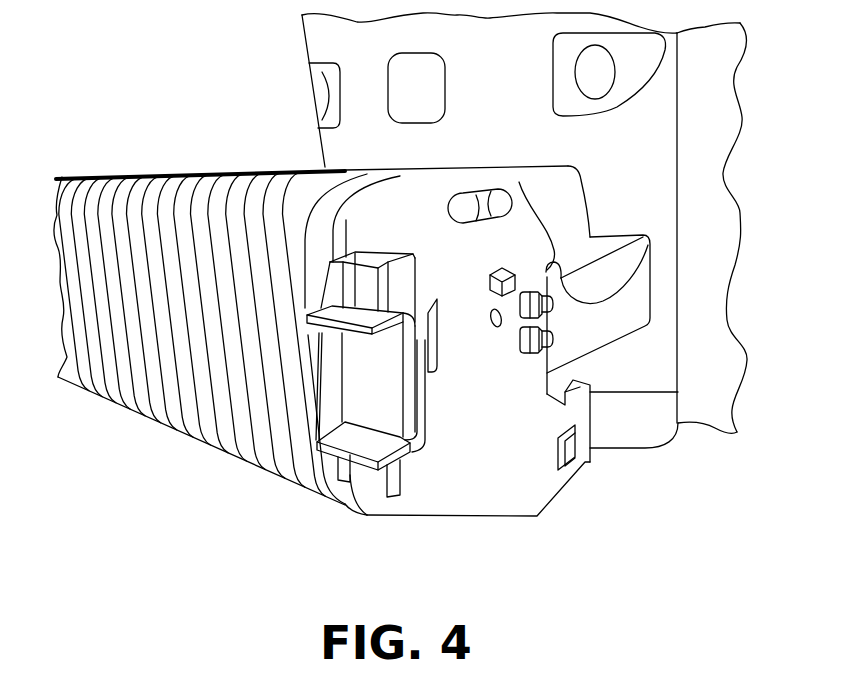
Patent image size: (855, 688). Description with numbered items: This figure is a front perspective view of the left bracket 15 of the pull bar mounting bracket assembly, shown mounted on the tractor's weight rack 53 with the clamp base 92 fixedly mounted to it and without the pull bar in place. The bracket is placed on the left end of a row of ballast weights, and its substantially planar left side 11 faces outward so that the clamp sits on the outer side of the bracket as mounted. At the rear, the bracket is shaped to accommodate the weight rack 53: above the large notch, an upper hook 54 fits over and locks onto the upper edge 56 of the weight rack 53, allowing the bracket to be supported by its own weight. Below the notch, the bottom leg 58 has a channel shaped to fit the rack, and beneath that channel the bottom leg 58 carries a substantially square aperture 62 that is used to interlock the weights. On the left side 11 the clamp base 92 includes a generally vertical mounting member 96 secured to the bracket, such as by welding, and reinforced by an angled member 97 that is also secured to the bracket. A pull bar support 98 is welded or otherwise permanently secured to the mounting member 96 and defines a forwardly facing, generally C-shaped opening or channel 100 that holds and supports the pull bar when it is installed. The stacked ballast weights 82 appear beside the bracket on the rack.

The left side 11 is at (412, 210).
The left bracket 15 is at (475, 262).
The weight rack 53 is at (597, 330).
The upper hook 54 is at (643, 250).
The upper edge 56 is at (519, 182).
The bottom leg 58 is at (533, 480).
The square aperture 62 is at (583, 463).
The cooling fins 82 is at (226, 491).
The clamp base 92 is at (348, 499).
The mounting member 96 is at (415, 372).
The angled member 97 is at (428, 345).
The pull bar support 98 is at (380, 380).
The channel 100 is at (388, 443).